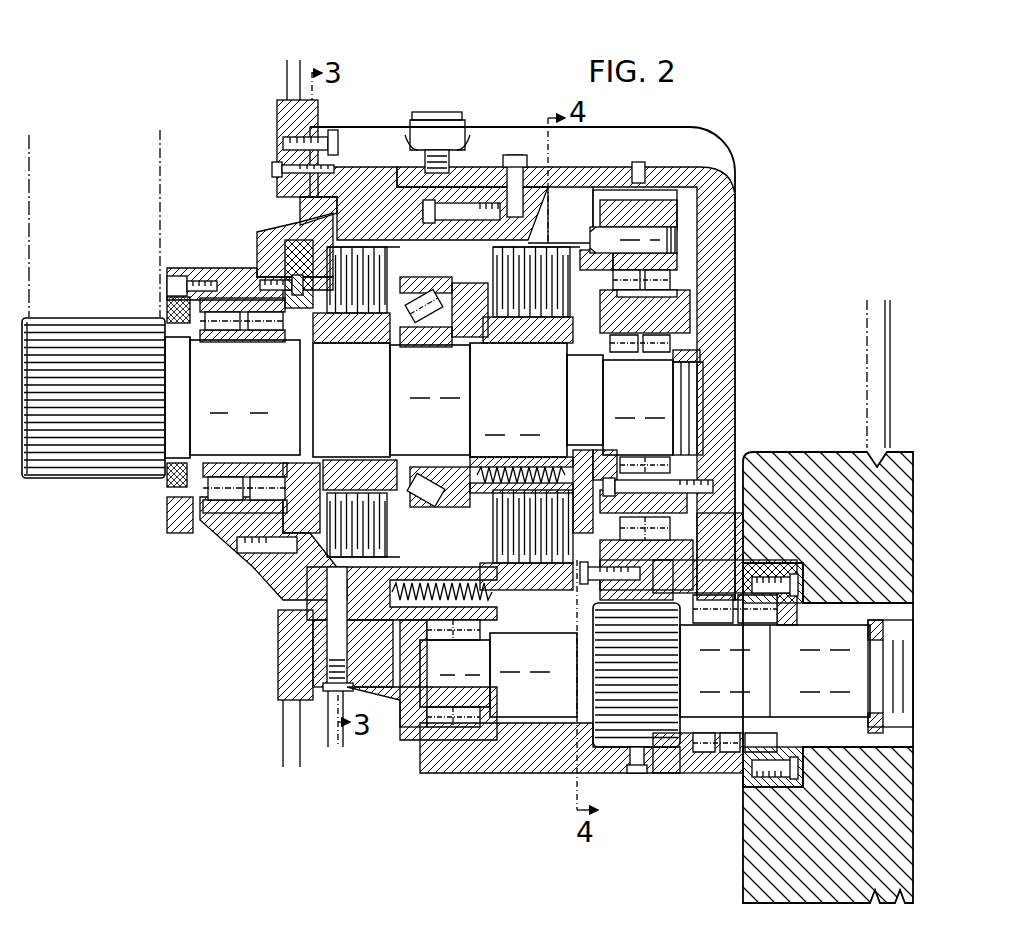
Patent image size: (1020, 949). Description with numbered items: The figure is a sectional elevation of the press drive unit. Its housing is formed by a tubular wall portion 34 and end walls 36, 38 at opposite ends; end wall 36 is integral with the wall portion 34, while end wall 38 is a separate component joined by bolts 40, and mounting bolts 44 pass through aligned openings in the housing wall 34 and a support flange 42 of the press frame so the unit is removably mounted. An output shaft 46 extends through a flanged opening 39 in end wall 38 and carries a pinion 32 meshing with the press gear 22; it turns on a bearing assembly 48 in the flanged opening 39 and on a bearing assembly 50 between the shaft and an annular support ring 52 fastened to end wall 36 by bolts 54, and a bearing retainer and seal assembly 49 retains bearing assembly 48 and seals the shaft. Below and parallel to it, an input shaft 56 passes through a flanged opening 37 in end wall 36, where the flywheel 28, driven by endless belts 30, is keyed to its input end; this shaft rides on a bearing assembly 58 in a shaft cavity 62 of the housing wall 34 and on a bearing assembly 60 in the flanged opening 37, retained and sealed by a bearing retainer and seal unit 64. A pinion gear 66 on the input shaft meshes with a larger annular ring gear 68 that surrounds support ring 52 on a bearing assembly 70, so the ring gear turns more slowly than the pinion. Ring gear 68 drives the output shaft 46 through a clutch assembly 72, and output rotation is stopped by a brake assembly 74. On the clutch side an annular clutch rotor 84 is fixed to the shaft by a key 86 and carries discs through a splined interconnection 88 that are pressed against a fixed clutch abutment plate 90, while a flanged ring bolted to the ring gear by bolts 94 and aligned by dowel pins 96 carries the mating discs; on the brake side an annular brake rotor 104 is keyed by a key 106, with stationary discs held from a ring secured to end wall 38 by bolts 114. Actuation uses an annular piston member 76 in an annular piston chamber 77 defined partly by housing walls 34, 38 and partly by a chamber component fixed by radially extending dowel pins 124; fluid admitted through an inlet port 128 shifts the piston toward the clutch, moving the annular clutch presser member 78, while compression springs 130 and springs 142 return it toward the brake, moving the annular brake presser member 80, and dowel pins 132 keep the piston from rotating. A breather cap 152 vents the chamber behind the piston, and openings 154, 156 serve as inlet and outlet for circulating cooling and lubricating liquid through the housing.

The press gear 22 is at (137, 188).
The flywheel 28 is at (750, 878).
The endless belts 30 is at (866, 318).
The pinion 32 is at (73, 480).
The tubular wall portion 34 is at (515, 745).
The end wall 36 is at (738, 250).
The flanged opening 37 is at (710, 755).
The end wall 38 is at (263, 568).
The flanged opening 39 is at (215, 503).
The bolts 40 is at (273, 168).
The support flange 42 is at (278, 112).
The mounting bolts 44 is at (284, 143).
The output shaft 46 is at (434, 397).
The bearing assembly 48 is at (200, 490).
The bearing retainer and seal assembly 49 is at (162, 487).
The bearing assembly 50 is at (683, 345).
The annular support ring 52 is at (690, 318).
The bolts 54 is at (713, 487).
The input shaft 56 is at (498, 675).
The bearing assembly 58 is at (420, 725).
The bearing assembly 60 is at (690, 755).
The shaft cavity 62 is at (445, 728).
The bearing retainer and seal unit 64 is at (748, 770).
The pinion gear 66 is at (597, 700).
The annular ring gear 68 is at (663, 213).
The bearing assembly 70 is at (683, 278).
The clutch assembly 72 is at (567, 222).
The brake assembly 74 is at (290, 235).
The annular piston member 76 is at (390, 190).
The annular piston cylinder 77 is at (310, 213).
The annular clutch presser member 78 is at (455, 315).
The annular brake presser member 80 is at (425, 300).
The annular clutch rotor 84 is at (517, 345).
The key 86 is at (548, 345).
The splined interconnection 88 is at (493, 345).
The clutch abutment plate 90 is at (588, 357).
The bolts 94 is at (592, 577).
The dowel pins 96 is at (650, 237).
The annular brake rotor 104 is at (342, 345).
The key 106 is at (375, 460).
The bolts 114 is at (315, 270).
The dowel pins 124 is at (517, 170).
The inlet port 128 is at (335, 650).
The compression springs 130 is at (450, 582).
The dowel pins 132 is at (472, 205).
The springs 142 is at (535, 468).
The breather cap 152 is at (447, 112).
The opening 154 is at (643, 175).
The opening 156 is at (632, 760).